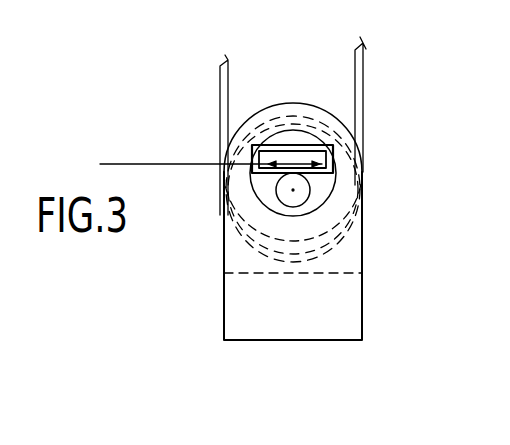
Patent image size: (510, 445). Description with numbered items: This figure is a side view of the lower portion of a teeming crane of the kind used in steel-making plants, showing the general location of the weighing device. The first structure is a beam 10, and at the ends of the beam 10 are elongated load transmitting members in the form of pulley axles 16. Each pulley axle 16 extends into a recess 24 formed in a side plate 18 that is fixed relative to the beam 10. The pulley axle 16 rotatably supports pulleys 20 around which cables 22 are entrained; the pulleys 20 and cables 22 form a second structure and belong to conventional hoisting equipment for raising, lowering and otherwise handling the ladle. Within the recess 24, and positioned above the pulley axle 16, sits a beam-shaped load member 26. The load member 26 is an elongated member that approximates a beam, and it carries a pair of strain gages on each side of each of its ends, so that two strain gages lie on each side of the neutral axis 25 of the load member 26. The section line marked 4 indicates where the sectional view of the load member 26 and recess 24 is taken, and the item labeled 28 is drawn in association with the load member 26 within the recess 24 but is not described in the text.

The section line 4- 4 is at (294, 78).
The beam 10 is at (350, 304).
The pulley axle 16 is at (330, 184).
The side plate 18 is at (352, 263).
The pulley 20 is at (217, 271).
The cable 22 is at (218, 71).
The recess 24 is at (329, 189).
The neutral axis 25 is at (165, 163).
The load member 26 is at (282, 146).
The inner rectangular element 28 is at (268, 163).